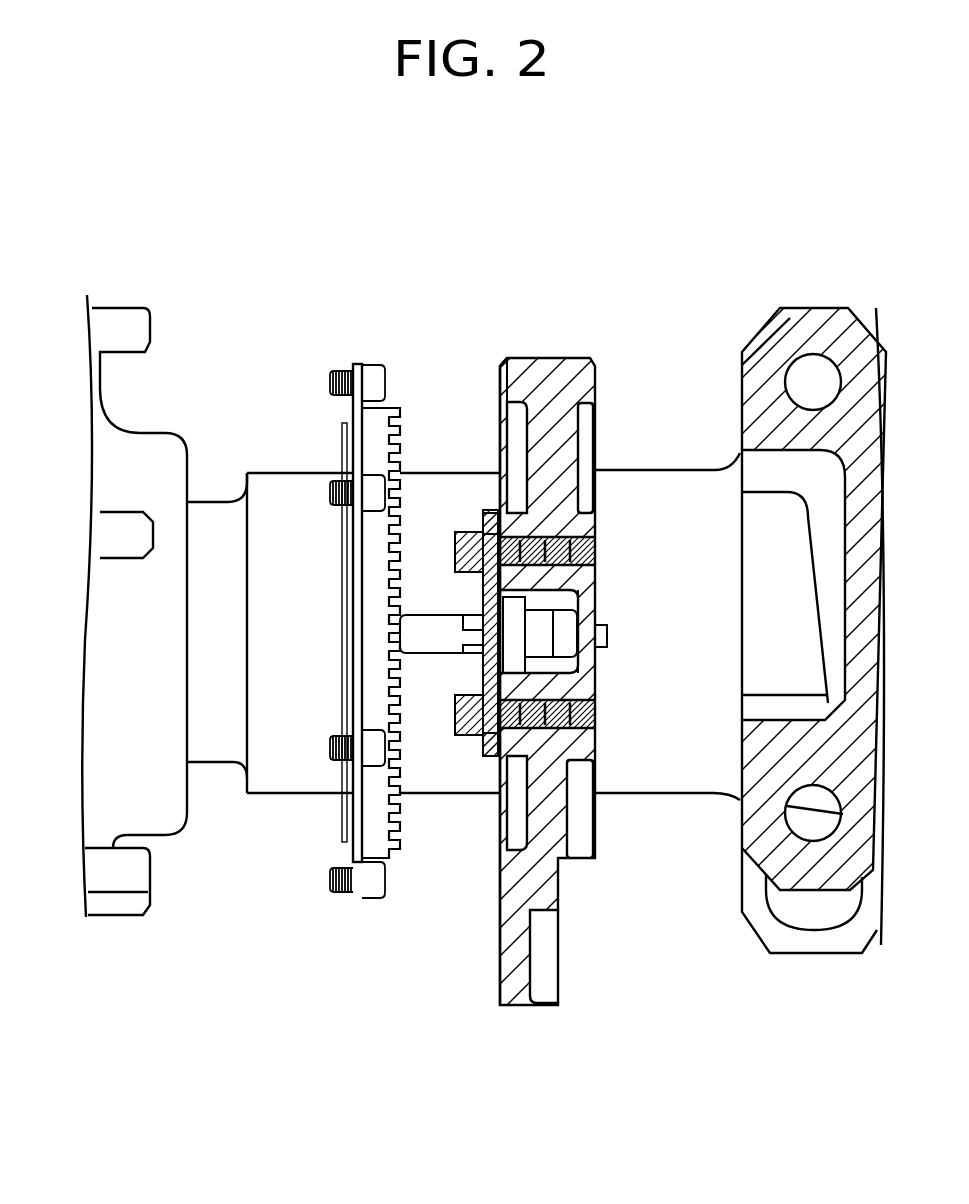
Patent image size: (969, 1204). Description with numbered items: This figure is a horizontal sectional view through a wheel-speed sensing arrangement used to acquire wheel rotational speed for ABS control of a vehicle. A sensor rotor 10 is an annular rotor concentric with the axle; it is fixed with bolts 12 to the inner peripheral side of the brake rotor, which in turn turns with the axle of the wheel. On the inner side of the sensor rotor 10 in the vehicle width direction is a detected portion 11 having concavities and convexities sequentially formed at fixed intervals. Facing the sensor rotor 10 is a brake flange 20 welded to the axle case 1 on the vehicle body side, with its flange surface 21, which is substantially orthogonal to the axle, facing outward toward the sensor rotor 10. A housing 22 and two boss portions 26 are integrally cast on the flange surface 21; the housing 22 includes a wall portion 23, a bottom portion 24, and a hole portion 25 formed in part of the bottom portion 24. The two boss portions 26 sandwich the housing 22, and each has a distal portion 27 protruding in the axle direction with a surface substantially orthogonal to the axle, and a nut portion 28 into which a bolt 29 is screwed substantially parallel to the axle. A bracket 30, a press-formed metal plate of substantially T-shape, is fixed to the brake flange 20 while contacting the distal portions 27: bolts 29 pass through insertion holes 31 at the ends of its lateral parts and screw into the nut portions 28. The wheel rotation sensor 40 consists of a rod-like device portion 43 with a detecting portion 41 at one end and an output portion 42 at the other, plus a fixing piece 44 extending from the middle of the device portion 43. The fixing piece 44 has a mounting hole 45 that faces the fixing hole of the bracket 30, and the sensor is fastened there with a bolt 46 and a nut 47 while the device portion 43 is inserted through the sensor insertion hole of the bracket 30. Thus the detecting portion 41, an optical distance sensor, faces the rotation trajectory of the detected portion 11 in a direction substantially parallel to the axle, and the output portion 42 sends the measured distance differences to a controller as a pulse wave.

The axle case 1 is at (258, 487).
The sensor rotor 10 is at (365, 417).
The detected portion 11 is at (400, 412).
The bolts 12 is at (347, 367).
The brake flange 20 is at (590, 358).
The flange surface 21 is at (520, 440).
The housing 22 is at (600, 700).
The wall portion 23 is at (597, 690).
The bottom portion 24 is at (597, 570).
The hole portion 25 is at (597, 588).
The boss portions 26 is at (505, 527).
The distal portion 27 is at (509, 532).
The nut portion 28 is at (597, 537).
The bolt 29 is at (463, 553).
The bracket 30 is at (500, 527).
The insertion hole 31 is at (483, 517).
The wheel rotation sensor 40 is at (352, 662).
The detecting portion 41 is at (355, 640).
The output portion 42 is at (577, 630).
The device portion 43 is at (590, 660).
The fixing piece 44 is at (487, 607).
The mounting hole 45 is at (527, 673).
The bolt 46 is at (607, 636).
The nut 47 is at (470, 650).